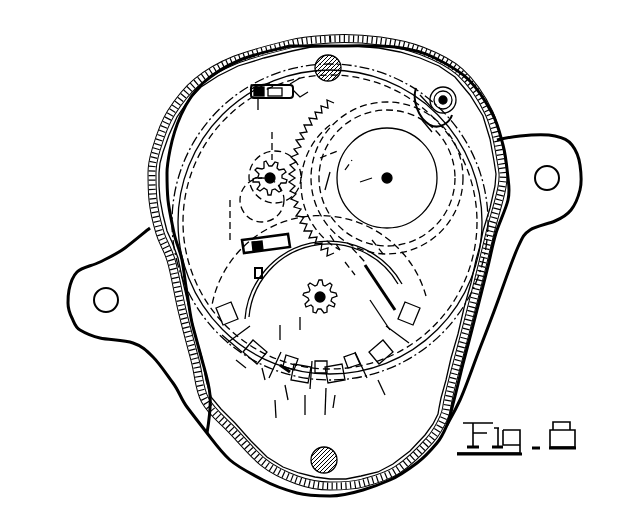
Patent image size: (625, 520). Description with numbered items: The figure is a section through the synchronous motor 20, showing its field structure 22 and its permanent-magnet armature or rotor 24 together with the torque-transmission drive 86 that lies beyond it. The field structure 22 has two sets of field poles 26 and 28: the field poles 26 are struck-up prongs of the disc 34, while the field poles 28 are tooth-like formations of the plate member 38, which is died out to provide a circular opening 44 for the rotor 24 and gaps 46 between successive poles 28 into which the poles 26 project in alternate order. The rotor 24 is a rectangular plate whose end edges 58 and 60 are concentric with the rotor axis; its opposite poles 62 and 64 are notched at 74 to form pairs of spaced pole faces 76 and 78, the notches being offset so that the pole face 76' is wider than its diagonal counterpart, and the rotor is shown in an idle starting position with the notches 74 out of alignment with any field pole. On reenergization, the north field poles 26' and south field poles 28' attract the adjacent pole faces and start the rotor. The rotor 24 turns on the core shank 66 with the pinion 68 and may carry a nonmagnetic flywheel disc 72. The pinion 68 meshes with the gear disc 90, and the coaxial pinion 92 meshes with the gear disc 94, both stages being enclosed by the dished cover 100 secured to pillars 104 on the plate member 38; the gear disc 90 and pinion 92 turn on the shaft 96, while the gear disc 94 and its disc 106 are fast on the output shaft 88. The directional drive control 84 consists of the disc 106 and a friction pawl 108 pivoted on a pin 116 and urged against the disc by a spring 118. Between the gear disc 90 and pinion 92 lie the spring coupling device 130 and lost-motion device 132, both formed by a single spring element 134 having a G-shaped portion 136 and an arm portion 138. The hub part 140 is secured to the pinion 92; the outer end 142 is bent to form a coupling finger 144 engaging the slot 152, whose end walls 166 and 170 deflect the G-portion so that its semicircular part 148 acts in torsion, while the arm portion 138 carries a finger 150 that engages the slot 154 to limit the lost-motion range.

The synchronous motor 20 is at (440, 52).
The field structure 22 is at (283, 372).
The armature or rotor 24 is at (381, 312).
The field poles 26 is at (324, 292).
The north field poles 26' is at (338, 393).
The field poles 28 is at (322, 241).
The south field poles 28' is at (350, 165).
The disc 34 is at (231, 367).
The plate member 38 is at (484, 306).
The circular opening 44 is at (224, 341).
The gaps 46 is at (306, 278).
The end edge 58 is at (410, 235).
The end edge 60 is at (274, 416).
The rotor pole 62 is at (364, 183).
The rotor pole 64 is at (324, 408).
The shank 66 is at (294, 318).
The pinion 68 is at (380, 287).
The disc 72 is at (262, 306).
The notches 74 is at (316, 300).
The pole faces 76 is at (360, 254).
The pole face 76' is at (352, 263).
The pole faces 78 is at (302, 361).
The directional drive control 84 is at (395, 112).
The torque-transmission drive 86 is at (307, 70).
The output shaft 88 is at (395, 180).
The gear disc 90 is at (215, 280).
The pinion 92 is at (262, 166).
The gear disc 94 is at (445, 245).
The shaft 96 is at (255, 178).
The dished cover or casing 100 is at (207, 85).
The pillars 104 is at (338, 57).
The disc 106 is at (420, 172).
The friction pawl 108 is at (426, 128).
The pin 116 is at (455, 98).
The spring 118 is at (424, 102).
The spring coupling device 130 is at (250, 85).
The lost-motion device 132 is at (268, 268).
The spring element 134 is at (335, 125).
The G-shaped portion 136 is at (326, 185).
The arm portion 138 is at (256, 199).
The hub part 140 is at (275, 160).
The outer end 142 is at (255, 113).
The coupling part or finger 144 is at (278, 101).
The semicircular part 148 is at (270, 324).
The coupling part or finger 150 is at (247, 245).
The slot 152 is at (306, 89).
The slot 154 is at (202, 220).
The end wall 166 is at (292, 71).
The end wall 170 is at (268, 95).